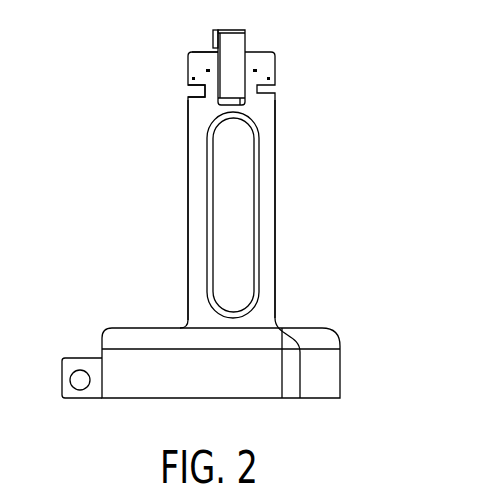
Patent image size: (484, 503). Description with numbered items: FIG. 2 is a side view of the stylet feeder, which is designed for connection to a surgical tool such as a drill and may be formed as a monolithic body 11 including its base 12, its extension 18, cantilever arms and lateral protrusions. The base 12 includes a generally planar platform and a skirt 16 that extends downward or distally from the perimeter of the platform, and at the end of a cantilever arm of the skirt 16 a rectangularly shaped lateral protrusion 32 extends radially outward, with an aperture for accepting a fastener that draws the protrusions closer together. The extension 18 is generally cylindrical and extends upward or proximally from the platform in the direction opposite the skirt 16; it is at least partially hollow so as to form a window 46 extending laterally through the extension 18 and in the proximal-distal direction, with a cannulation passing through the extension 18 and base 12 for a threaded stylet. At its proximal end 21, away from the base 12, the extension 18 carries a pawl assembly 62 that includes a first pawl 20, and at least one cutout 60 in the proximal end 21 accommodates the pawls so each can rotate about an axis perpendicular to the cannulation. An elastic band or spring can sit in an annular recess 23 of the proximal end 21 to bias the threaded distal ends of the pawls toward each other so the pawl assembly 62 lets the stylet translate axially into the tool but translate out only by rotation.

The monolithic body 11 is at (160, 291).
The base 12 is at (320, 314).
The skirt 16 is at (287, 360).
The extension 18 is at (296, 191).
The first pawl 20 is at (236, 47).
The proximal end 21 is at (198, 51).
The annular recess 23 is at (181, 89).
The lateral protrusion 32 is at (80, 358).
The window 46 is at (238, 222).
The cutout 60 is at (243, 102).
The pawl assembly 62 is at (297, 72).